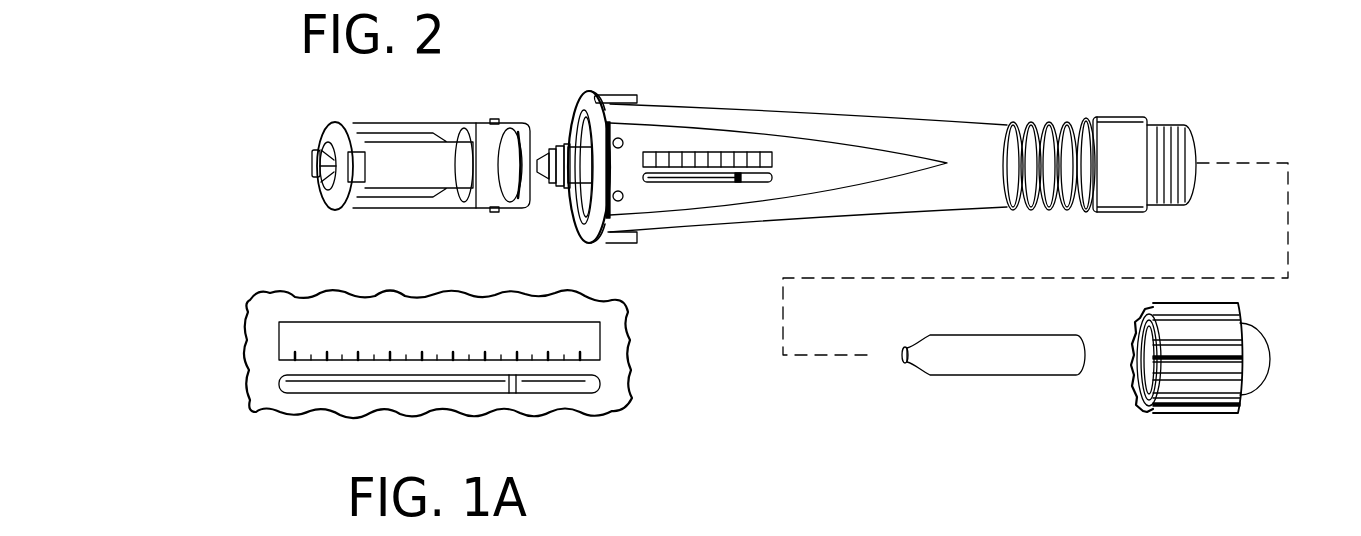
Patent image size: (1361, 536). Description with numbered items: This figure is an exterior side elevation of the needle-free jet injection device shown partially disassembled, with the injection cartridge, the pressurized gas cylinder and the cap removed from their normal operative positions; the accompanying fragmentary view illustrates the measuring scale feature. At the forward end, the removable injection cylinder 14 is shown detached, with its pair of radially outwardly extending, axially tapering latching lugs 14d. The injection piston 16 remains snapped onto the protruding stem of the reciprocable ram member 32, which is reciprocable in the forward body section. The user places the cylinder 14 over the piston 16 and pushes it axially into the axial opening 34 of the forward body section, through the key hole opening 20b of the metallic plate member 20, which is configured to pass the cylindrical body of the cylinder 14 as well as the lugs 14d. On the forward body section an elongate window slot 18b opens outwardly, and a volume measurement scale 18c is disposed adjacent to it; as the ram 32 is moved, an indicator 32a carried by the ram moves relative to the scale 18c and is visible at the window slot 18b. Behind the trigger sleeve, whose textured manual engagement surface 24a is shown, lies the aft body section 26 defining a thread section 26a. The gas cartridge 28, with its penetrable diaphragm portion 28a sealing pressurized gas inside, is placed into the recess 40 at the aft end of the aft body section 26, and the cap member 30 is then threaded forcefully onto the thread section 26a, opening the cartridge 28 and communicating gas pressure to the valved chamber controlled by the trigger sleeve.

In FIG. 2, the injection cylinder member 14 is at (376, 114).
In FIG. 2, the latching lugs 14d is at (505, 119).
In FIG. 2, the injection piston 16 is at (565, 150).
In FIG. 2, the window slot 18b is at (702, 182).
In FIG. 1A, the window slot 18b is at (600, 390).
In FIG. 2, the volume measurement scale 18c is at (690, 152).
In FIG. 1A, the volume measurement scale 18c is at (293, 330).
In FIG. 2, the plate member 20 is at (586, 98).
In FIG. 2, the key hole opening 20b is at (618, 201).
In FIG. 2, the manual engagement surface 24a is at (1033, 120).
In FIG. 2, the aft body section 26 is at (1113, 117).
In FIG. 2, the thread section 26a is at (1165, 207).
In FIG. 2, the gas cartridge 28 is at (980, 360).
In FIG. 2, the penetrable diaphragm portion 28a is at (903, 358).
In FIG. 2, the cap member 30 is at (1237, 313).
In FIG. 2, the ram member 32 is at (590, 172).
In FIG. 2, the indicator 32a is at (742, 182).
In FIG. 1A, the indicator 32a is at (505, 385).
In FIG. 2, the axial opening 34 is at (576, 194).
In FIG. 2, the recess 40 is at (1205, 136).